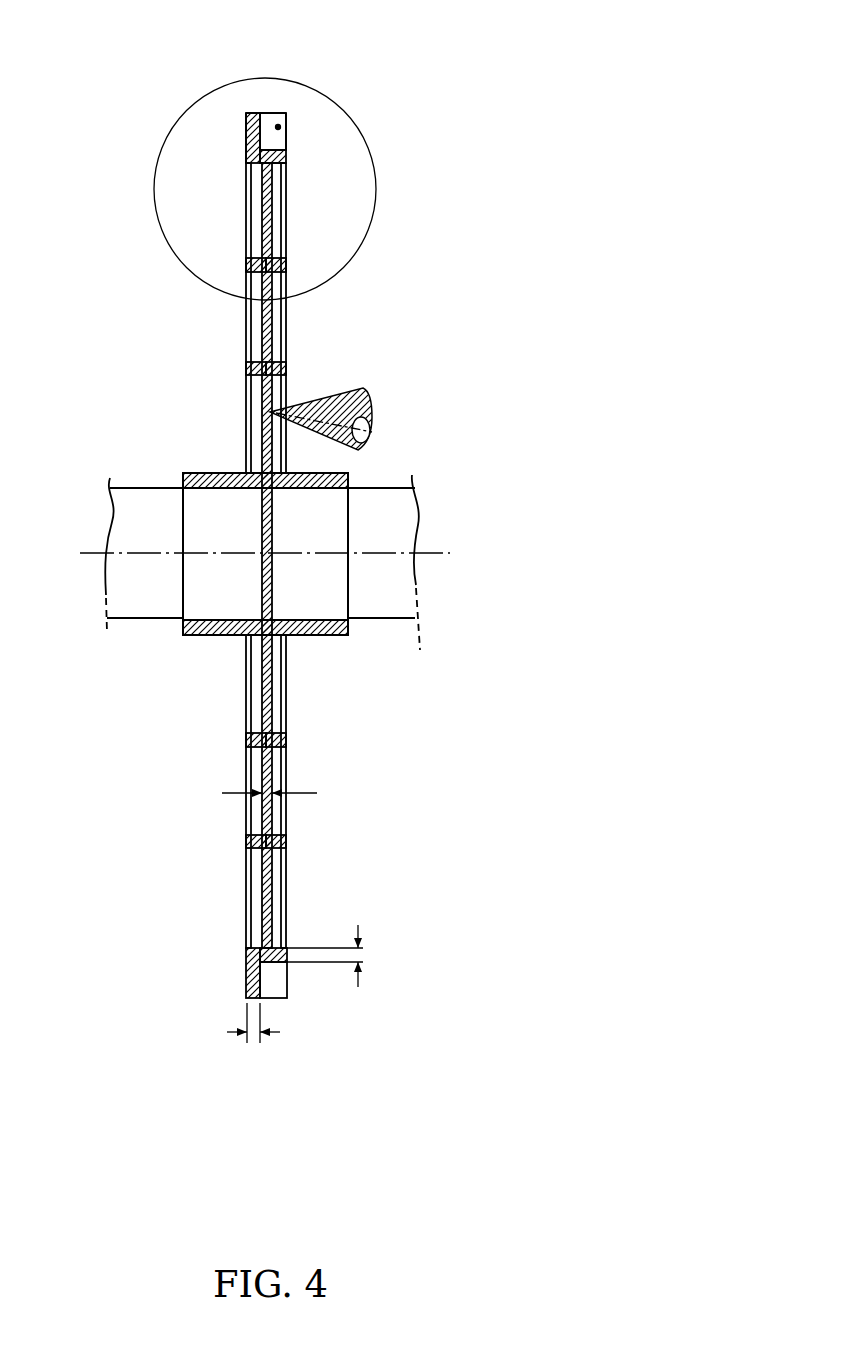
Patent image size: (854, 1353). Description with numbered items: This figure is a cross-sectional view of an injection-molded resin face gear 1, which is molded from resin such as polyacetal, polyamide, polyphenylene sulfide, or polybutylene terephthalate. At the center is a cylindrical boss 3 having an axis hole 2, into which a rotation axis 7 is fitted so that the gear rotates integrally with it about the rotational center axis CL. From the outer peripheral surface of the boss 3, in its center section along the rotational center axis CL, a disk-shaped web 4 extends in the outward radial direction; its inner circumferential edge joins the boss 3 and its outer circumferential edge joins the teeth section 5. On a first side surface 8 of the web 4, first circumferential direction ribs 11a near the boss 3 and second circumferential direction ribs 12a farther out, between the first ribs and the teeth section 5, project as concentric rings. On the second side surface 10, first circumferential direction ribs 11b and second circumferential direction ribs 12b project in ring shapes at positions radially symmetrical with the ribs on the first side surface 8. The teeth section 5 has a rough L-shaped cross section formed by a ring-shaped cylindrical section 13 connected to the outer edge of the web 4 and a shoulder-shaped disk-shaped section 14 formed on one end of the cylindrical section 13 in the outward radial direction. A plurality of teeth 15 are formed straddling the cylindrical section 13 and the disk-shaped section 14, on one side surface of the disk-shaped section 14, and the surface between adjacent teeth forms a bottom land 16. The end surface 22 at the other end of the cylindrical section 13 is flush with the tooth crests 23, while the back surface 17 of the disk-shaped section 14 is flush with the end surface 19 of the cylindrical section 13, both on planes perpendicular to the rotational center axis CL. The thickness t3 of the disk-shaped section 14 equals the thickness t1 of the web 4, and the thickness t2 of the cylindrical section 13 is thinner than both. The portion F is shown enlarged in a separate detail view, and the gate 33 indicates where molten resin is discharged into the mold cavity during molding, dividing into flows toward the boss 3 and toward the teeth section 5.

The injection-molded resin face gear 1 is at (325, 116).
The axis hole 2 is at (303, 488).
The boss 3 is at (203, 474).
The web 4 is at (268, 428).
The teeth section 5 is at (278, 111).
The rotation axis 7 is at (392, 619).
The first side surface 8 is at (274, 187).
The second side surface 10 is at (247, 207).
The first circumferential direction ribs 11a is at (286, 368).
The first circumferential direction ribs 11b is at (247, 368).
The second circumferential direction ribs 12a is at (286, 265).
The second circumferential direction ribs 12b is at (247, 267).
The cylindrical section 13 is at (286, 155).
The disk-shaped section 14 is at (247, 116).
The teeth 15 is at (279, 126).
The bottom land 16 is at (244, 113).
The back surface 17 is at (247, 127).
The end surface 19 is at (247, 160).
The end surface 22 is at (286, 163).
The tooth crests 23 is at (286, 143).
The gate 33 is at (370, 400).
The portion F is at (181, 115).
The rotational center axis CL is at (400, 553).
The thickness of the web t1 is at (257, 793).
The thickness of the cylindrical section t2 is at (345, 956).
The thickness of the disk-shaped section t3 is at (237, 1026).